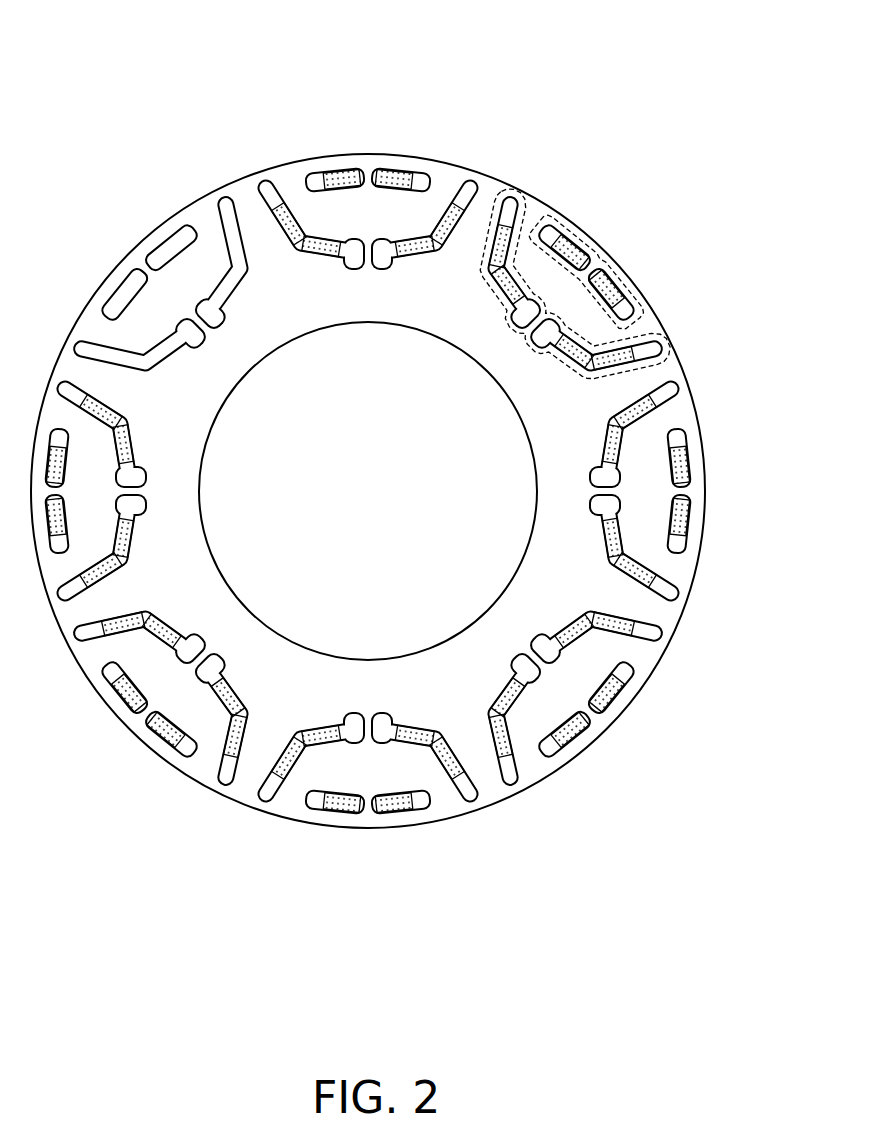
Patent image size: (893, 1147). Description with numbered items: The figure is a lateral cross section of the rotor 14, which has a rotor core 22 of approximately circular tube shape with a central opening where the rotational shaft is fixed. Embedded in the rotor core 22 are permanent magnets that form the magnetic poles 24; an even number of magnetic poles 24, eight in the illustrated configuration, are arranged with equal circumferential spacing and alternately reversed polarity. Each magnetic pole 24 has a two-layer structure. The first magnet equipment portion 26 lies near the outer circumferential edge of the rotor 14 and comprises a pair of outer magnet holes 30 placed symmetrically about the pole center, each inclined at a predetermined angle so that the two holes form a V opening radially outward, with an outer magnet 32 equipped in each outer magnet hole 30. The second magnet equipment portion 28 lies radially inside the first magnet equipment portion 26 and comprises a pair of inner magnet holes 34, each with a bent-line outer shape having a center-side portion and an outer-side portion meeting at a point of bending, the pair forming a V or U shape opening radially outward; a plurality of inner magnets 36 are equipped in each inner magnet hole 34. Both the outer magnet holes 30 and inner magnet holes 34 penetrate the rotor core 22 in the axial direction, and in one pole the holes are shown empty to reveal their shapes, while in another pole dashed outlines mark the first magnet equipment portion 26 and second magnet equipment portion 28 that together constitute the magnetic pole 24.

The rotor 14 is at (398, 467).
The rotor core 22 is at (450, 808).
The magnetic pole 24 is at (601, 288).
The first magnet equipment portion 26 is at (523, 205).
The second magnet equipment portion 28 is at (614, 271).
The outer magnet hole 30 is at (123, 297).
The outer magnet 32 is at (387, 172).
The inner magnet hole 34 is at (172, 350).
The inner magnet 36 is at (265, 217).